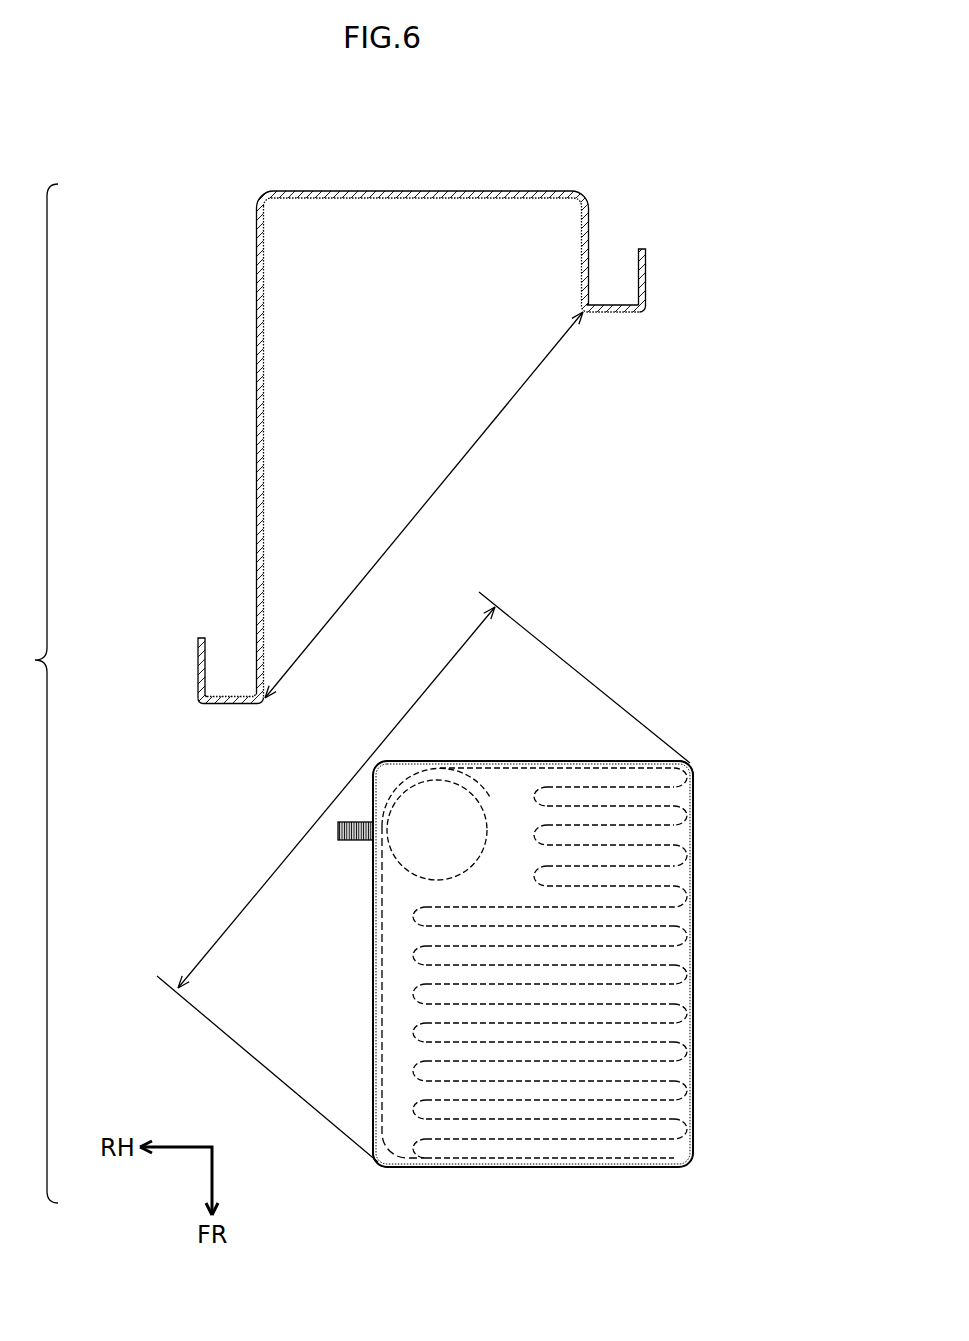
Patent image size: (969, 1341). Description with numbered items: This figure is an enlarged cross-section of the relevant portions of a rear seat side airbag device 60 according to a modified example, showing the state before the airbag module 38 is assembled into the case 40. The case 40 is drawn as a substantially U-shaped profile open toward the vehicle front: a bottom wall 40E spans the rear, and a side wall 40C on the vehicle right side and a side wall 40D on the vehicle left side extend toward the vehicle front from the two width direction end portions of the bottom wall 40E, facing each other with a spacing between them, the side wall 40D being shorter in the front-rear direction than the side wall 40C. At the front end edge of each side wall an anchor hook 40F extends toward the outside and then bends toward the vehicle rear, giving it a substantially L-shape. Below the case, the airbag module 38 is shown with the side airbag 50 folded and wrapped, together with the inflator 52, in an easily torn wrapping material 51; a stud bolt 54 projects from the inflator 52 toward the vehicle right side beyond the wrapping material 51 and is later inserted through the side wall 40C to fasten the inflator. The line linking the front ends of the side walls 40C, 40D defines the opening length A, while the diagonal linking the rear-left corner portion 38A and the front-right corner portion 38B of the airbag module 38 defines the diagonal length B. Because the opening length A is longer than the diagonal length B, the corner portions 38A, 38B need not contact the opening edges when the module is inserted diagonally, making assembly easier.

The airbag module 38 is at (589, 1169).
The corner portion 38A is at (693, 770).
The corner portion 38B is at (380, 1168).
The case 40 is at (347, 190).
The side wall 40C is at (257, 433).
The side wall 40D is at (589, 254).
The bottom wall 40E is at (432, 191).
The anchor hook 40F is at (647, 274).
The side airbag 50 is at (687, 1032).
The wrapping material 51 is at (693, 950).
The inflator 52 is at (490, 797).
The stud bolt 54 is at (347, 840).
The rear seat side airbag device 60 is at (753, 296).
The opening length A is at (434, 498).
The diagonal length B is at (318, 820).